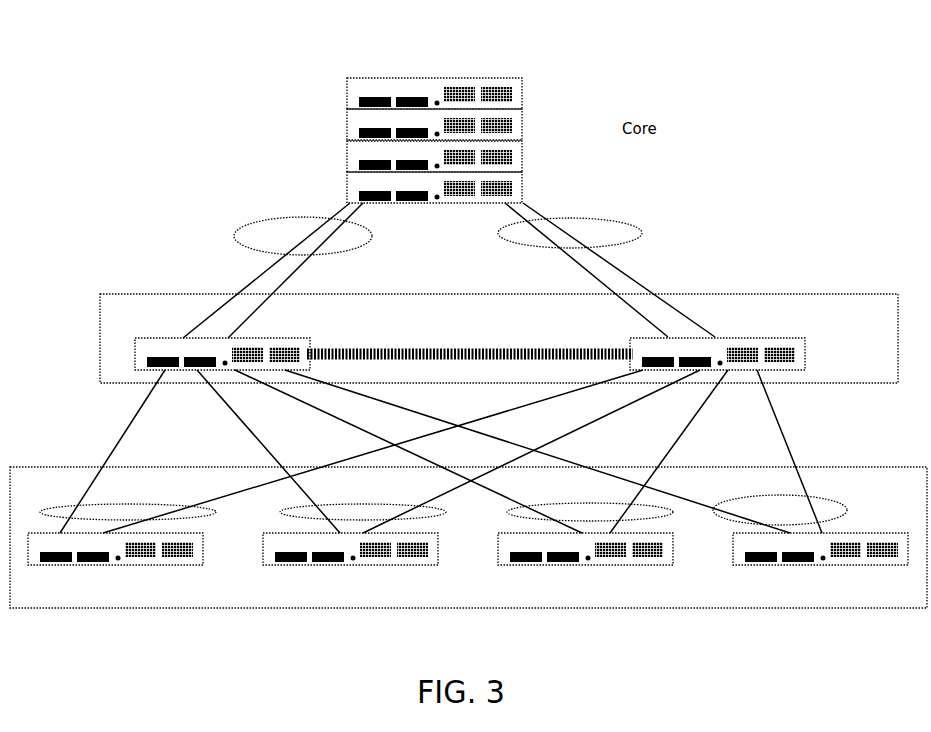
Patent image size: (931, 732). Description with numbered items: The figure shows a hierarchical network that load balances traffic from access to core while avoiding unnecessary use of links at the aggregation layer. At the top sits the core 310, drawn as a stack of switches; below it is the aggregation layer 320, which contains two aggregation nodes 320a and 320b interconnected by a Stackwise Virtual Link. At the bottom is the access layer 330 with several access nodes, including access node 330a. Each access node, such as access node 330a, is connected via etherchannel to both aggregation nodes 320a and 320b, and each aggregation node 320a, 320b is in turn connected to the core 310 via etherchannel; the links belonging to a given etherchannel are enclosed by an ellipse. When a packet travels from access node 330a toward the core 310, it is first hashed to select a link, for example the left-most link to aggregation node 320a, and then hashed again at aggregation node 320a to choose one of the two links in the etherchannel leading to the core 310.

The core 310 is at (522, 78).
The aggregation layer 320 is at (499, 304).
The aggregation node 320a is at (268, 337).
The aggregation node 320b is at (713, 337).
The access layer 330 is at (468, 573).
The access node 330a is at (128, 565).